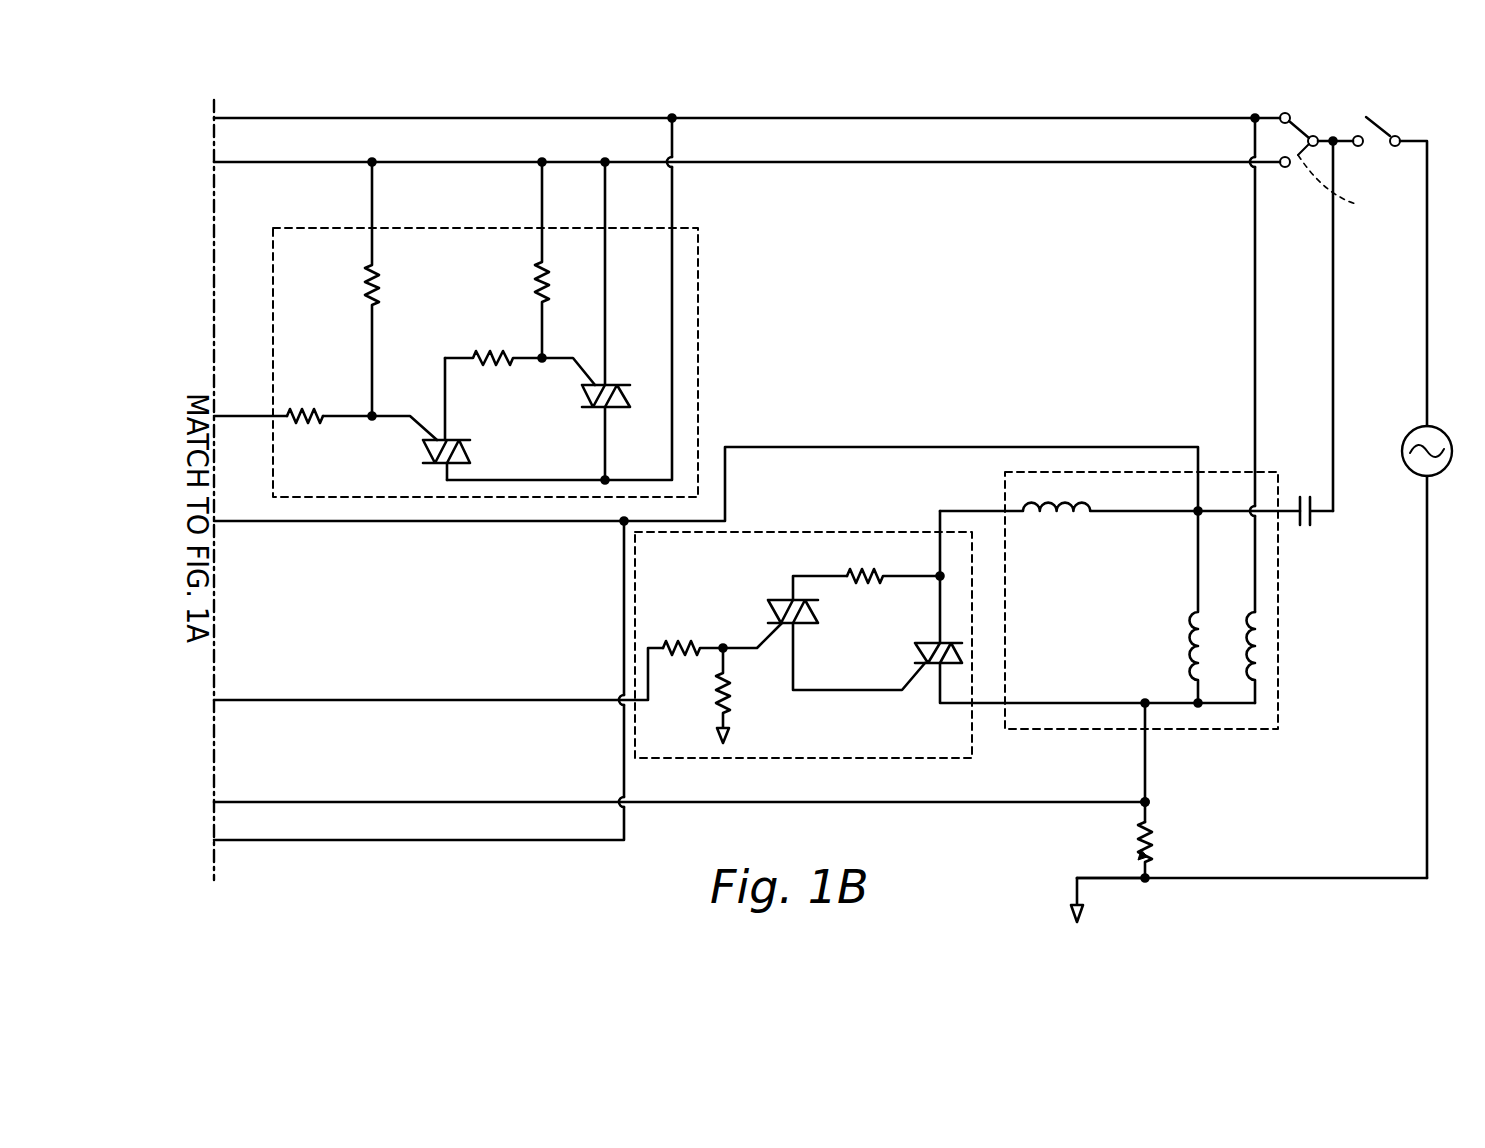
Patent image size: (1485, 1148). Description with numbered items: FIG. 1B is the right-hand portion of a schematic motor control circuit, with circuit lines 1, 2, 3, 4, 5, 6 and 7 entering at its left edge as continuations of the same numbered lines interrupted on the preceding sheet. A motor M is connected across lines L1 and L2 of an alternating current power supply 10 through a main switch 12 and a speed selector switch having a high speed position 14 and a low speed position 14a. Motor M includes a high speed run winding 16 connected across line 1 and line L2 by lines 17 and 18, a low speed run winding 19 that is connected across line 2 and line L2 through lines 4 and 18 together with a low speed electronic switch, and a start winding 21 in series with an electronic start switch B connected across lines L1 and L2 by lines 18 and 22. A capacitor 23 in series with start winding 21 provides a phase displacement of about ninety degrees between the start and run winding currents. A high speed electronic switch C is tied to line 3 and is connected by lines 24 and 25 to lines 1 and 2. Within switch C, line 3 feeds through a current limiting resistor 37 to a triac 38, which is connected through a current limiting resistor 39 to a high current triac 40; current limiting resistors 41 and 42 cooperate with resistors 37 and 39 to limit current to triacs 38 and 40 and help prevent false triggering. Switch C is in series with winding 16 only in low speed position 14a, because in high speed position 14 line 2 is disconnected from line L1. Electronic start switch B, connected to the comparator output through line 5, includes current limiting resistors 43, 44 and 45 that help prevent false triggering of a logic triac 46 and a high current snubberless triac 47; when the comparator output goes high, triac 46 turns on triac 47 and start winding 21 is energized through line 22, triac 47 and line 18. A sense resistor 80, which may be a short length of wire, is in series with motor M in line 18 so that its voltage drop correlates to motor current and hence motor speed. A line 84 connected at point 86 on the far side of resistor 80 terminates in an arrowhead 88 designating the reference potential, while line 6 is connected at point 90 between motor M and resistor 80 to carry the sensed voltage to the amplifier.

The circuit line 1 is at (248, 118).
The circuit line 2 is at (248, 162).
The circuit line 3 is at (226, 416).
The circuit line 4 is at (226, 521).
The circuit line 5 is at (226, 700).
The circuit line 6 is at (226, 802).
The circuit line 7 is at (230, 843).
The alternating current power supply 10 is at (1410, 432).
The main switch 12 is at (1385, 128).
The high speed position 14 is at (1297, 132).
The low speed position 14a is at (1349, 180).
The high speed run winding 16 is at (1248, 632).
The line 17 is at (1252, 335).
The line 18 is at (1145, 745).
The low speed run winding 19 is at (1190, 645).
The start winding 21 is at (1085, 516).
The line 22 is at (1333, 318).
The capacitor 23 is at (1312, 518).
The line 24 is at (676, 190).
The line 25 is at (609, 190).
The current limiting resistor 37 is at (303, 410).
The triac 38 is at (470, 455).
The current limiting resistor 39 is at (490, 352).
The high current triac 40 is at (612, 384).
The current limiting resistor 41 is at (366, 285).
The current limiting resistor 42 is at (538, 275).
The current limiting resistor 43 is at (685, 645).
The current limiting resistor 44 is at (862, 570).
The current limiting resistor 45 is at (726, 705).
The logic triac 46 is at (790, 600).
The high current snubberless triac 47 is at (932, 642).
The sense resistor 80 is at (1155, 842).
The line 84 is at (1100, 876).
The point 86 is at (1150, 882).
The arrowhead 88 is at (1072, 915).
The point 90 is at (1140, 800).
The electronic start switch B is at (803, 518).
The high speed electronic switch C is at (706, 368).
The motor M is at (1285, 660).
The line L1 is at (1415, 141).
The line L2 is at (1383, 878).